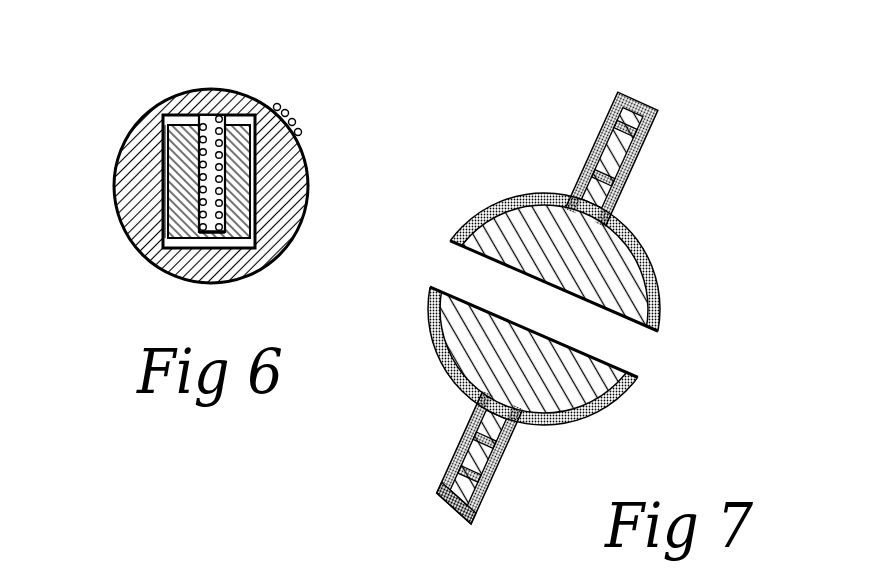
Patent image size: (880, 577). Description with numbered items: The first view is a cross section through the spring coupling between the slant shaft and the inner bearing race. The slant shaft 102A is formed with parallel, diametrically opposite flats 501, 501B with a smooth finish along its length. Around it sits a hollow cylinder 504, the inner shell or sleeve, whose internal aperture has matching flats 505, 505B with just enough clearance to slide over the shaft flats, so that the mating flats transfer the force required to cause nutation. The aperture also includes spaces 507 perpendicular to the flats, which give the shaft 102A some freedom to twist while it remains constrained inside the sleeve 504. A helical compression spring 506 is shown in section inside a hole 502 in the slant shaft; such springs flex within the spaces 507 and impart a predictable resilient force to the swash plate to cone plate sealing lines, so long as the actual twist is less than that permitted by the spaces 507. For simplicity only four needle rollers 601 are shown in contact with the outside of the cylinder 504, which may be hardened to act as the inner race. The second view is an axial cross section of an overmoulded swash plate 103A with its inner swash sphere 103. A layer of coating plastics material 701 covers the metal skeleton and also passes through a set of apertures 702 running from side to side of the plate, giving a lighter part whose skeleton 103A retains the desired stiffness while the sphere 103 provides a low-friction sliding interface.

In FIG. 6, the hollow cylinder 504 is at (153, 117).
In FIG. 6, the helical compression spring 506 is at (203, 117).
In FIG. 6, the needle rollers 601 is at (277, 105).
In FIG. 6, the slant shaft 102A is at (182, 173).
In FIG. 6, the flat 505 is at (157, 177).
In FIG. 6, the flat 501 is at (168, 207).
In FIG. 6, the spaces 507 is at (173, 252).
In FIG. 6, the hole 502 is at (268, 222).
In FIG. 6, the flat 501B is at (245, 192).
In FIG. 6, the flat 505B is at (241, 222).
In FIG. 7, the apertures 702 is at (650, 140).
In FIG. 7, the inner swash sphere 103 is at (624, 267).
In FIG. 7, the coating plastics material 701 is at (453, 437).
In FIG. 7, the swash plate 103A is at (442, 502).